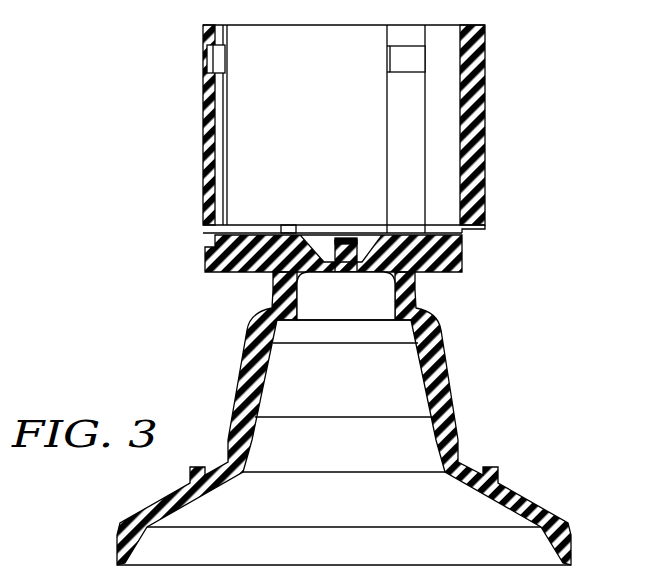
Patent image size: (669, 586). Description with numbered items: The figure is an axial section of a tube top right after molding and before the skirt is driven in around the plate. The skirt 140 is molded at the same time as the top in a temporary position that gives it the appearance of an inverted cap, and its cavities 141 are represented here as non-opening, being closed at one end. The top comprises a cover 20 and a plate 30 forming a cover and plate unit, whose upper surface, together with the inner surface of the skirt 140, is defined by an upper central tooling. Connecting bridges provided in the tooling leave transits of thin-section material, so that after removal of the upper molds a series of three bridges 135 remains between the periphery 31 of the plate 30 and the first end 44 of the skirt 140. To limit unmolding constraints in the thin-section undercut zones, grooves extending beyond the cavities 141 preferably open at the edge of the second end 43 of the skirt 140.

The cover 20 is at (412, 272).
The plate 30 is at (240, 272).
The periphery of the plate 31 is at (463, 256).
The second end of the skirt 43 is at (485, 33).
The first end of the skirt 44 is at (487, 219).
The bridges 135 is at (467, 229).
The skirt 140 is at (485, 136).
The cavities 141 is at (215, 62).